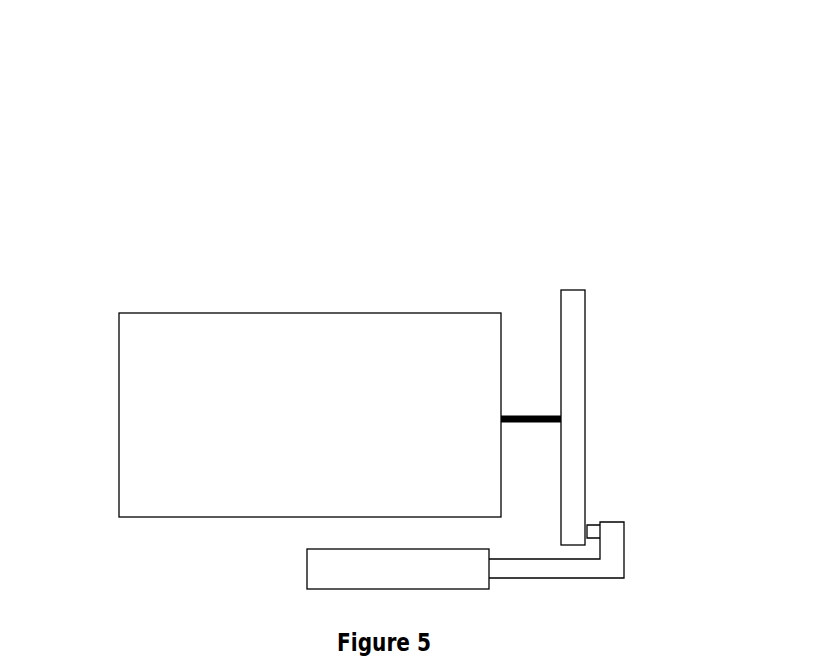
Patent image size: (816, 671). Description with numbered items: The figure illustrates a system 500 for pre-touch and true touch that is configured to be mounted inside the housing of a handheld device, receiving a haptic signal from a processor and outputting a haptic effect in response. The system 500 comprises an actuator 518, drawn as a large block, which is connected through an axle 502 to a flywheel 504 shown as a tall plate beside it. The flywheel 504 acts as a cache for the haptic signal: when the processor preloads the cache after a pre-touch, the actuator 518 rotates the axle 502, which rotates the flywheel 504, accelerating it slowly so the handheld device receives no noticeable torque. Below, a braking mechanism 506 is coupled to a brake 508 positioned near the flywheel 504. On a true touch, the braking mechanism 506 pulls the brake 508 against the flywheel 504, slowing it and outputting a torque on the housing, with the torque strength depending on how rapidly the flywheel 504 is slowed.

The system 500 is at (122, 168).
The actuator 518 is at (121, 340).
The axle 502 is at (535, 412).
The flywheel 504 is at (585, 318).
The braking mechanism 506 is at (307, 584).
The brake 508 is at (625, 555).